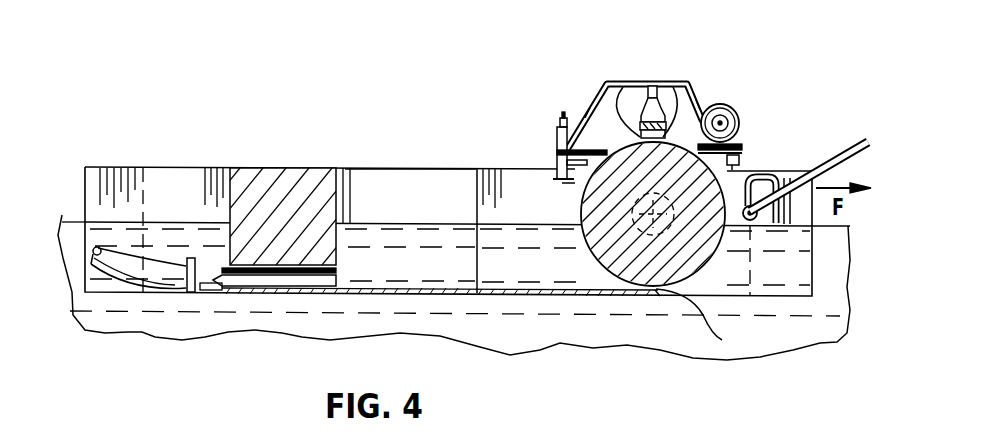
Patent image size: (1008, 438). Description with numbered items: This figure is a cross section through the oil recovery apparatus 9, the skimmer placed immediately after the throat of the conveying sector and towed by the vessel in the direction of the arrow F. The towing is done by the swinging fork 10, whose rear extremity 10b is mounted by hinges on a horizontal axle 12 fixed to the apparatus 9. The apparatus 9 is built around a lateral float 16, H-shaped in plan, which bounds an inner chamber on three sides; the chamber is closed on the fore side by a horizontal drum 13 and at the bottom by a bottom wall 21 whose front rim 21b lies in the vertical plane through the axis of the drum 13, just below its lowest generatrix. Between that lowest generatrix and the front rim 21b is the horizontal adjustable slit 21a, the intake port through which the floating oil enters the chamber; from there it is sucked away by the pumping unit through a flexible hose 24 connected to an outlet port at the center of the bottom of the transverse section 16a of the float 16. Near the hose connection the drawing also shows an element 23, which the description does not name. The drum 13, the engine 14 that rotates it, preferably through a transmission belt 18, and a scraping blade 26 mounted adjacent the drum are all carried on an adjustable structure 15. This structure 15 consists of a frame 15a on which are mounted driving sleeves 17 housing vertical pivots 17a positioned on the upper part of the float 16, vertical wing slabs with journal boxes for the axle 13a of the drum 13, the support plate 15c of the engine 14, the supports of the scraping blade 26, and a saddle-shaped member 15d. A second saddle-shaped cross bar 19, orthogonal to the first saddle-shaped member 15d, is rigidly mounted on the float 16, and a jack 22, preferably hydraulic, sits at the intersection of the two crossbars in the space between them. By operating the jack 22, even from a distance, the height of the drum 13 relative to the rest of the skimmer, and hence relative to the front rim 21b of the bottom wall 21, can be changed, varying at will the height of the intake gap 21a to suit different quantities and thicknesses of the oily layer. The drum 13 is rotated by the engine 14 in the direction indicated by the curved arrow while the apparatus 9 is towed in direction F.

The recovery apparatus 9 is at (375, 160).
The swinging fork 10 is at (843, 150).
The rear extremity of the swinging fork 10b is at (787, 178).
The horizontal axle 12 is at (753, 186).
The horizontal drum 13 is at (562, 232).
The axle of the drum 13a is at (602, 264).
The engine 14 is at (733, 113).
The adjustable structure 15 is at (699, 74).
The frame 15a is at (556, 168).
The support plate of the engine 15c is at (740, 142).
The saddle-shaped member 15d is at (592, 102).
The lateral float 16 is at (428, 186).
The transverse section of the float 16a is at (290, 184).
The driving sleeves 17 is at (557, 136).
The vertical pivots 17a is at (561, 116).
The transmission belt 18 is at (710, 110).
The second saddle-shaped cross bar 19 is at (623, 84).
The bottom wall 21 is at (455, 296).
The horizontal adjustable slit 21a is at (706, 319).
The front rim of the bottom wall 21b is at (650, 292).
The jack 22 is at (657, 84).
The plate 23 is at (288, 287).
The flexible hose 24 is at (158, 277).
The scraping blade 26 is at (568, 188).